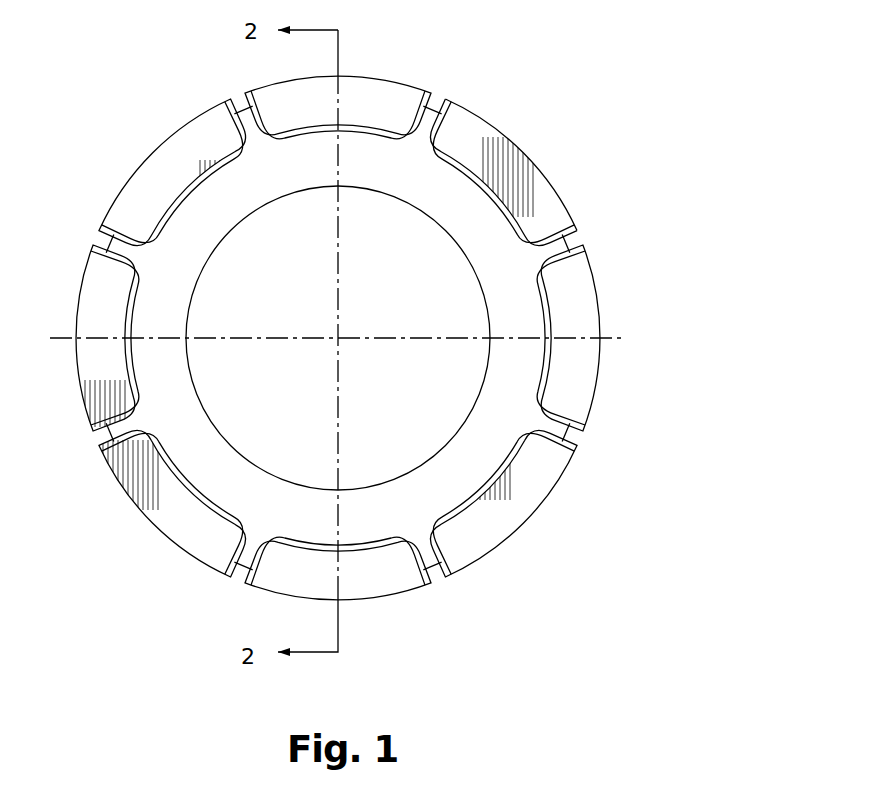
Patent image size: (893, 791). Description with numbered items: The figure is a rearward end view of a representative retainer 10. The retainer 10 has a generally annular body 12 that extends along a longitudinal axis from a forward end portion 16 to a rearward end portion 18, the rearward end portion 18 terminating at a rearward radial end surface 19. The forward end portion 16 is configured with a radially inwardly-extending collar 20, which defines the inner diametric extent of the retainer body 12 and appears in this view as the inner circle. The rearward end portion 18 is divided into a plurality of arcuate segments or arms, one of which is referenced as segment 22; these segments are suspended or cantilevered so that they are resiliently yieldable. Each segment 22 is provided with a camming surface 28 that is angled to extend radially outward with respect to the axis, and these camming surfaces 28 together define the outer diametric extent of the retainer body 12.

The retainer 10 is at (630, 70).
The annular body 12 is at (240, 578).
The forward end portion 16 is at (486, 242).
The rearward end portion 18 is at (447, 100).
The rearward radial end surface 19 is at (507, 167).
The radially inwardly-extending collar 20 is at (408, 478).
The arcuate segment 22 is at (575, 187).
The camming surface 28 is at (580, 214).